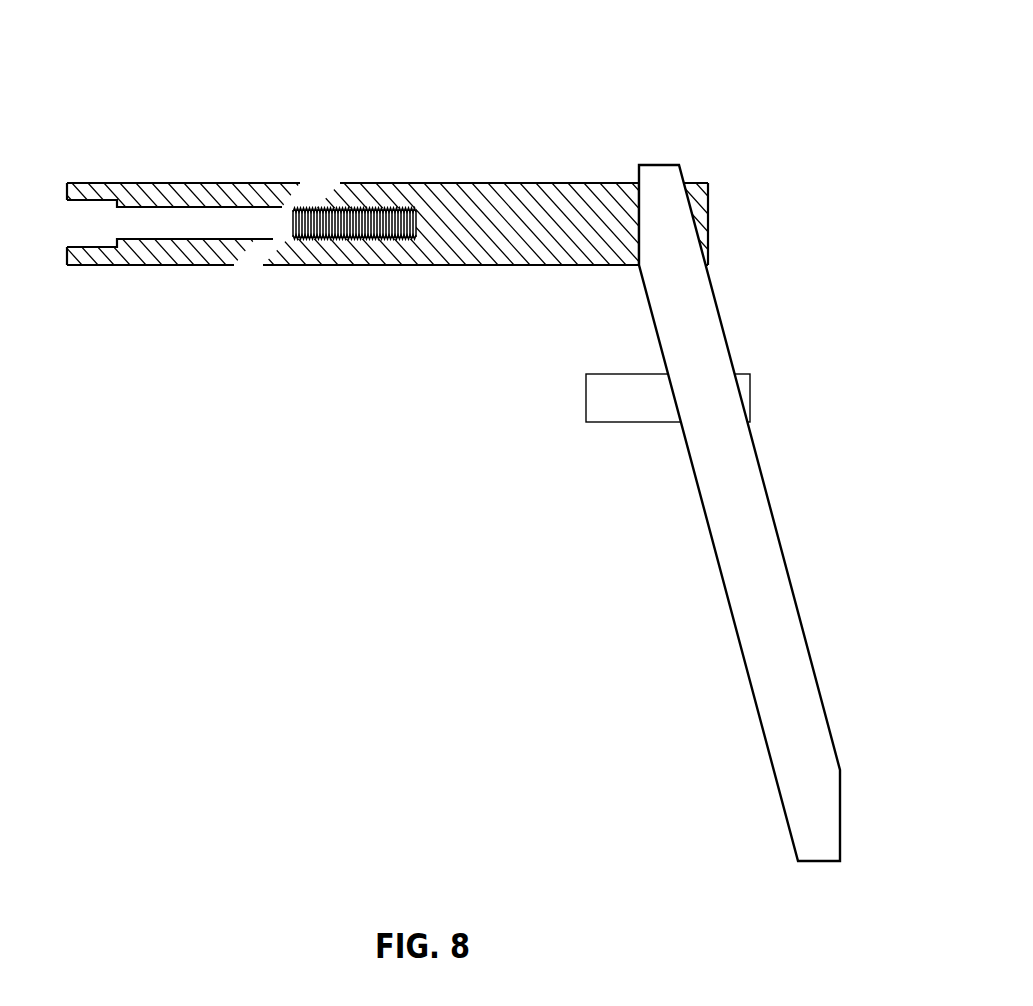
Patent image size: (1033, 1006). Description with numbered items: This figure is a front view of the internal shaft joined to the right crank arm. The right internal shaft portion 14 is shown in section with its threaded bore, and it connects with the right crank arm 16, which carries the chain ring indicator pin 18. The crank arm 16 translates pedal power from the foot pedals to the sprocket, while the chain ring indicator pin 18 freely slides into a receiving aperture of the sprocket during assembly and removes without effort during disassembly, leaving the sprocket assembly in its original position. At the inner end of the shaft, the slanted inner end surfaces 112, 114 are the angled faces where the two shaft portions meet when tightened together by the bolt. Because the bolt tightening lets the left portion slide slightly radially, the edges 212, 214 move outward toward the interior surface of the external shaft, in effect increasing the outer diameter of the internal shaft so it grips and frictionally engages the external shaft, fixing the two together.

The right internal shaft portion 14 is at (153, 193).
The right crank arm 16 is at (732, 609).
The chain ring indicator pin 18 is at (605, 409).
The slanted inner end surface 112 is at (263, 265).
The slanted inner end surface 114 is at (288, 200).
The edge 212 is at (288, 200).
The edge 214 is at (263, 265).